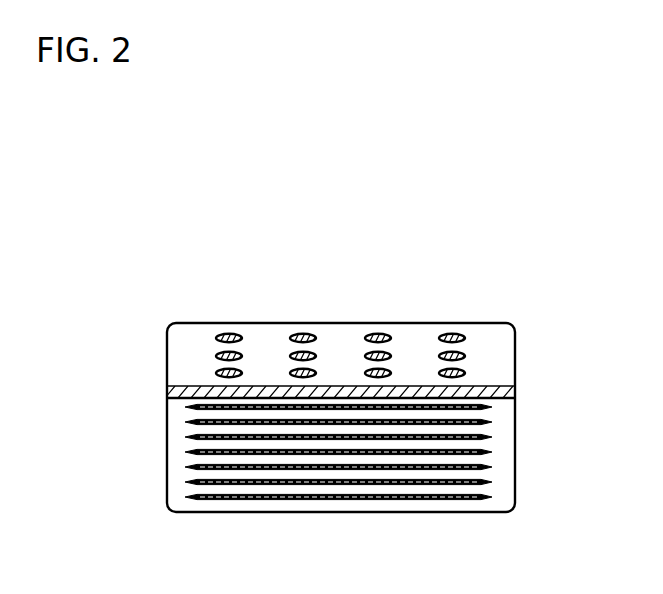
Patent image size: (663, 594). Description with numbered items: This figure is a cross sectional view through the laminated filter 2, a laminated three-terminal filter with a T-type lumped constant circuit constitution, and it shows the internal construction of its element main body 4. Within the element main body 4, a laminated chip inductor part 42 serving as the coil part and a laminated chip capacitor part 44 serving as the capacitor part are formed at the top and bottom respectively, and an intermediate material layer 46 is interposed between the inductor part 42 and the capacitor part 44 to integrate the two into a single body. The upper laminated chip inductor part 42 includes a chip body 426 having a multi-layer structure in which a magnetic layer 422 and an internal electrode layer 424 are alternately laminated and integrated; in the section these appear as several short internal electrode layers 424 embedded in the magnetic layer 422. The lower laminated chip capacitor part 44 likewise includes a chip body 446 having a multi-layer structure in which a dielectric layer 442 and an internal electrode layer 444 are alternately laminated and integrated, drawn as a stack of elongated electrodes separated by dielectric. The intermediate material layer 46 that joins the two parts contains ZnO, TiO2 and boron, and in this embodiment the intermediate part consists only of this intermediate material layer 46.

The laminated filter 2 is at (511, 283).
The element main body 4 is at (170, 321).
The laminated chip inductor part 42 is at (527, 330).
The laminated chip capacitor part 44 is at (529, 408).
The intermediate material layer 46 is at (496, 393).
The magnetic layer 422 is at (343, 330).
The internal electrode layer 424 is at (231, 331).
The chip body 426 is at (517, 325).
The dielectric layer 442 is at (290, 490).
The internal electrode layer 444 is at (378, 480).
The chip body 446 is at (187, 506).